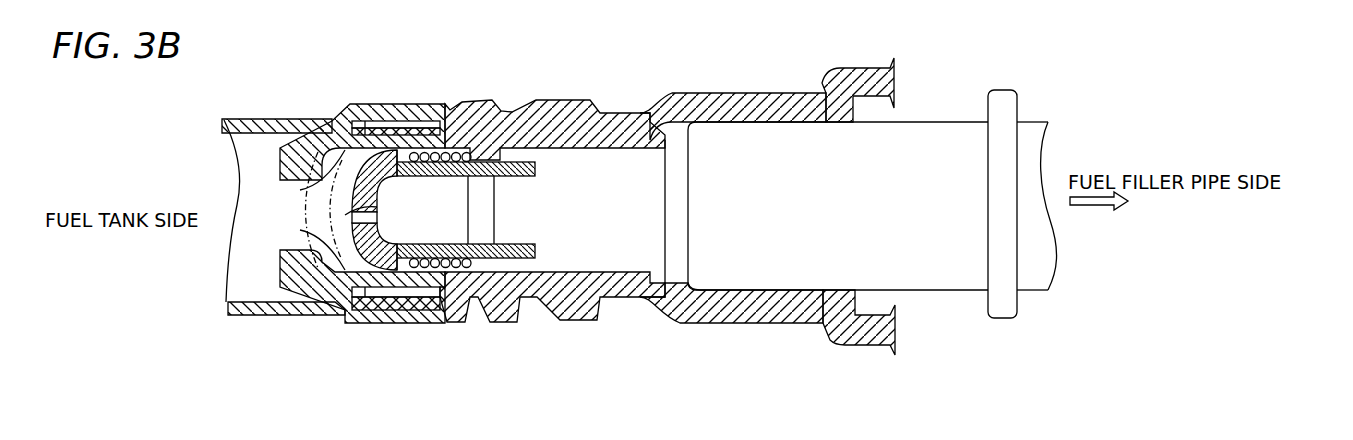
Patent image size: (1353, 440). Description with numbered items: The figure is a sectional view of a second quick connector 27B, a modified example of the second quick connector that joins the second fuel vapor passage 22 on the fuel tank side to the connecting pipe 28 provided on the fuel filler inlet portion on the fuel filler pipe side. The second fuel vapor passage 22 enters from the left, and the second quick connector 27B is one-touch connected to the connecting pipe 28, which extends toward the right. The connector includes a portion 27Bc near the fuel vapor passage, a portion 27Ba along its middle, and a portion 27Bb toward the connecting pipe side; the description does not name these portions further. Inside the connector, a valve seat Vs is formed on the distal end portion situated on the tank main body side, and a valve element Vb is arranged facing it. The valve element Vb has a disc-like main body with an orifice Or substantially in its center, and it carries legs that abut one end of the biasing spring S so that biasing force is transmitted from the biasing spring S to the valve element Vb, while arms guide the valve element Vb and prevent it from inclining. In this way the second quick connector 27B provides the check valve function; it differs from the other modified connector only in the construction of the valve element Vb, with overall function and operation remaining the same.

The second fuel vapor passage 22 is at (262, 122).
The valve housing portion 27Bc is at (318, 148).
The engaging portion of check valve unit 27Ba is at (455, 125).
The second quick connector 27B is at (652, 99).
The flange portion of check valve unit 27Bb is at (770, 112).
The connecting pipe 28 is at (932, 121).
The valve seat Vs is at (310, 200).
The orifice Or is at (345, 216).
The valve element Vb is at (348, 312).
The biasing spring S is at (452, 300).